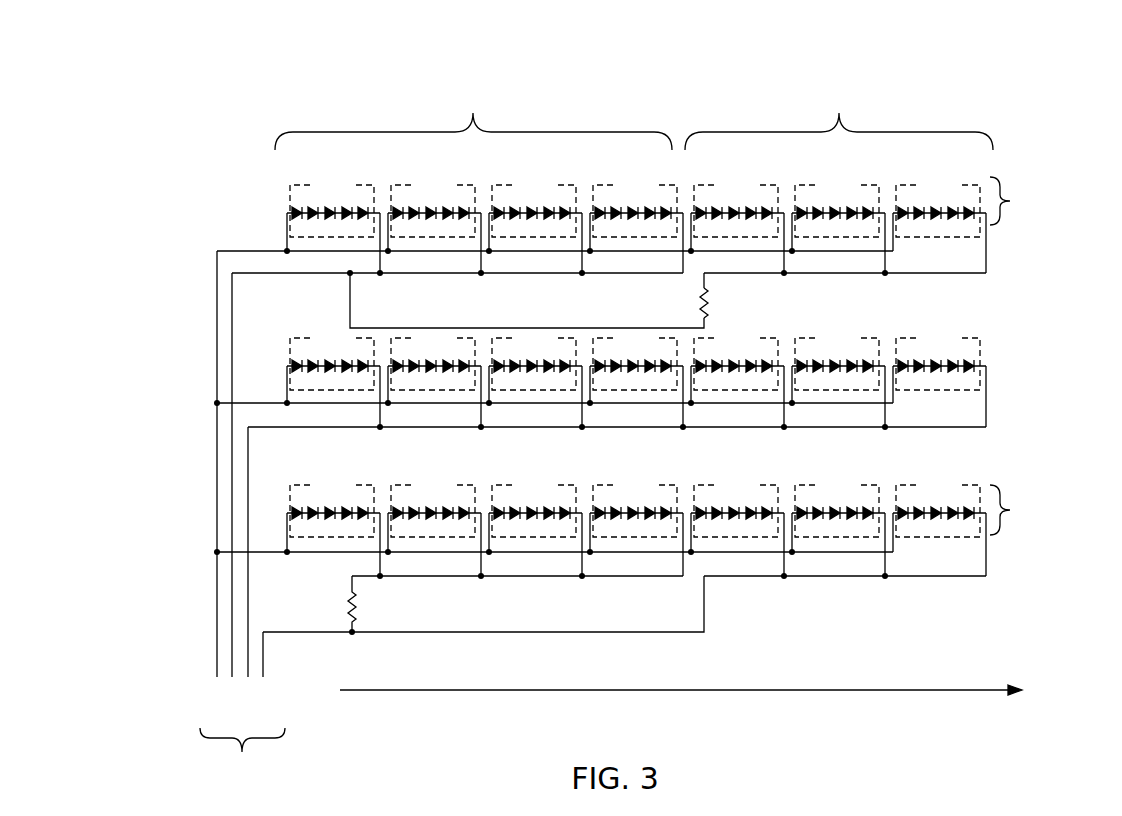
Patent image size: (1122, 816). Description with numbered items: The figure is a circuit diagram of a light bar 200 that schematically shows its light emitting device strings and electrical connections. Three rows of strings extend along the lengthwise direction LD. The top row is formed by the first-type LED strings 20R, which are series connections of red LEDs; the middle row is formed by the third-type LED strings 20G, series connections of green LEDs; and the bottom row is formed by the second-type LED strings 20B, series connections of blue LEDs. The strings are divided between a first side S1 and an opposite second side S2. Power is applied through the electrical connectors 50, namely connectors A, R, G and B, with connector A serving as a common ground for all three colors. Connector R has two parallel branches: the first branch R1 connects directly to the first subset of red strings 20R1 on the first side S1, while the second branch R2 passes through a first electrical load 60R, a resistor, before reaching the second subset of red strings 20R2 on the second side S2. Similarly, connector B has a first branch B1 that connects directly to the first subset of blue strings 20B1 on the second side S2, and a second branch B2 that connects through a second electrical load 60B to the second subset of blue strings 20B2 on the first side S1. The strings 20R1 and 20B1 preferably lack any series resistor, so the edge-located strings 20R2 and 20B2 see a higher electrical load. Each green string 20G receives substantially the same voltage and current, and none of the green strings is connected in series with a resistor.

The light bar 200 is at (1088, 98).
The first subset of the first-type LED strings 20R1 is at (310, 200).
The second subset of the first-type LED strings 20R2 is at (714, 200).
The third-type LED strings 20G is at (314, 353).
The first subset of the second-type LED strings 20B1 is at (714, 500).
The second subset of the second-type LED strings 20B2 is at (310, 500).
The first-type LED strings 20R is at (1023, 201).
The second-type LED strings 20B is at (1022, 510).
The first electrical load 60R is at (700, 292).
The second electrical load 60B is at (350, 597).
The electrical connectors 50 is at (243, 515).
The first electrical connector branch R1 is at (502, 275).
The second electrical connector branch R2 is at (840, 278).
The first electrical connector branch B1 is at (836, 574).
The second electrical connector branch B2 is at (462, 578).
The first side S1 is at (473, 119).
The second side S2 is at (839, 117).
The lengthwise direction LD is at (681, 703).